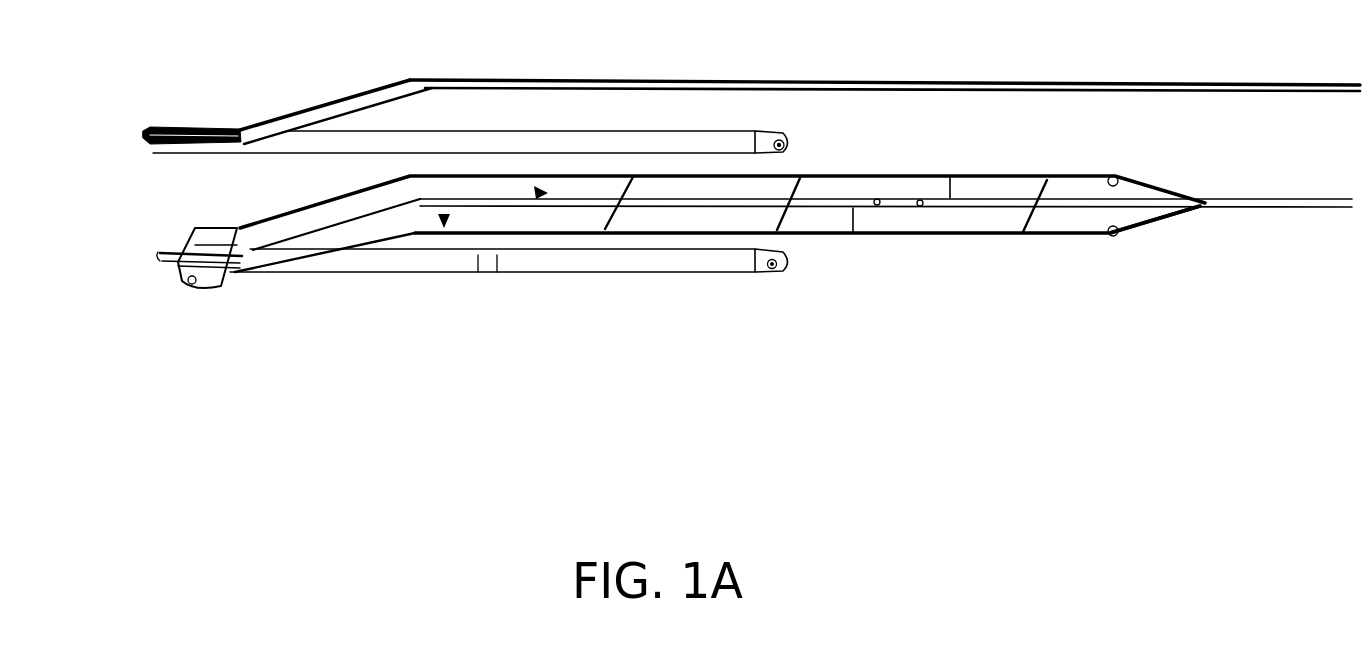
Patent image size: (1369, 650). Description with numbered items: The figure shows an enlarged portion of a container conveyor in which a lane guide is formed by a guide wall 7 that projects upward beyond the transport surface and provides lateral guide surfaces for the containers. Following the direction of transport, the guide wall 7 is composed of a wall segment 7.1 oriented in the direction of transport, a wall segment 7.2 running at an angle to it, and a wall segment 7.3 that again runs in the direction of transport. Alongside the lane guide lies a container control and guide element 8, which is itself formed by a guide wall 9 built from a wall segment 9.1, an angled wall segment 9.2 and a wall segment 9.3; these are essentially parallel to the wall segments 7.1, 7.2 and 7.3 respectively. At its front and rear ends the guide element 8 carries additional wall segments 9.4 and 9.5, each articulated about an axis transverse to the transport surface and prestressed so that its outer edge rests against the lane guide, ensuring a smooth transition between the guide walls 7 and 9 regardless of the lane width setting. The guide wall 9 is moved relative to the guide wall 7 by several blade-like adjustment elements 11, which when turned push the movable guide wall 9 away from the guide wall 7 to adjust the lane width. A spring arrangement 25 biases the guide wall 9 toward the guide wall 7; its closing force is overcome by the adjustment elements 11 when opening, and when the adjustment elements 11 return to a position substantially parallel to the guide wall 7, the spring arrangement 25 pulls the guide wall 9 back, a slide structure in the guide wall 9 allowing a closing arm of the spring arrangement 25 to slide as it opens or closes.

The guide wall 7 is at (1252, 194).
The wall segment 7.1 is at (142, 146).
The wall segment 7.2 is at (340, 104).
The wall segment 7.3 is at (680, 88).
The container control and guide element 8 is at (933, 162).
The guide wall 9 is at (856, 166).
The wall segment 9.1 is at (203, 294).
The wall segment 9.2 is at (347, 253).
The wall segment 9.3 is at (667, 235).
The additional wall segment 9.4 is at (185, 282).
The additional wall segment 9.5 is at (1167, 229).
The adjustment element 11 is at (603, 226).
The spring arrangement 25 is at (540, 192).